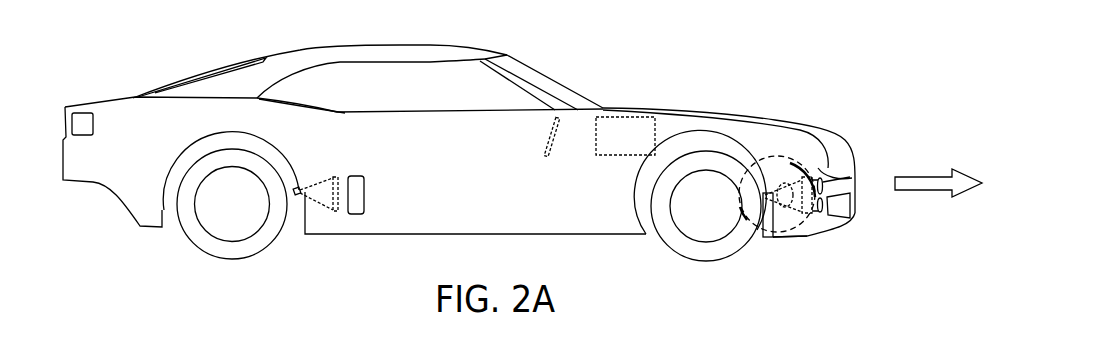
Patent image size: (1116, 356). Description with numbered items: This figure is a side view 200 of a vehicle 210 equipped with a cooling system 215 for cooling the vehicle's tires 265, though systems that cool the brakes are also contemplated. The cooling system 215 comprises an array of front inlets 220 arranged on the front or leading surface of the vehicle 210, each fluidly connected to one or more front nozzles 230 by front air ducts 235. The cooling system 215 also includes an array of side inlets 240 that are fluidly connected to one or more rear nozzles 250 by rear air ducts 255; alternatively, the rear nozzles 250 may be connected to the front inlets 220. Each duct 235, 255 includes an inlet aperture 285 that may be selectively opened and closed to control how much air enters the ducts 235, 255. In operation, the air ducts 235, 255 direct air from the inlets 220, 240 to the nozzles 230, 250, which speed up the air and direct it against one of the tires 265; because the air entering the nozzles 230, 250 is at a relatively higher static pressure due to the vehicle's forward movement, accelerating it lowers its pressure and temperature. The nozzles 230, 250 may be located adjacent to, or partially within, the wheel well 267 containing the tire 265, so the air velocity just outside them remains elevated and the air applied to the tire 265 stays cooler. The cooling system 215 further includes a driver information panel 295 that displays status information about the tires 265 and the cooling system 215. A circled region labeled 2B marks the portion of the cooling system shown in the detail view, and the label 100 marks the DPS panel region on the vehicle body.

The driver protection system (DPS) controller 100 is at (628, 118).
The side view 200 is at (834, 36).
The vehicle 210 is at (288, 50).
The cooling system 215 is at (326, 158).
The front inlets 220 is at (855, 205).
The front nozzles 230 is at (767, 237).
The front air ducts 235 is at (793, 237).
The side inlets 240 is at (366, 195).
The rear nozzles 250 is at (298, 195).
The rear air ducts 255 is at (336, 213).
The tires 265 is at (188, 242).
The wheel well 267 is at (172, 176).
The inlet aperture 285 is at (336, 176).
The driver information panel 295 is at (548, 133).
The detail view region 2B is at (805, 226).